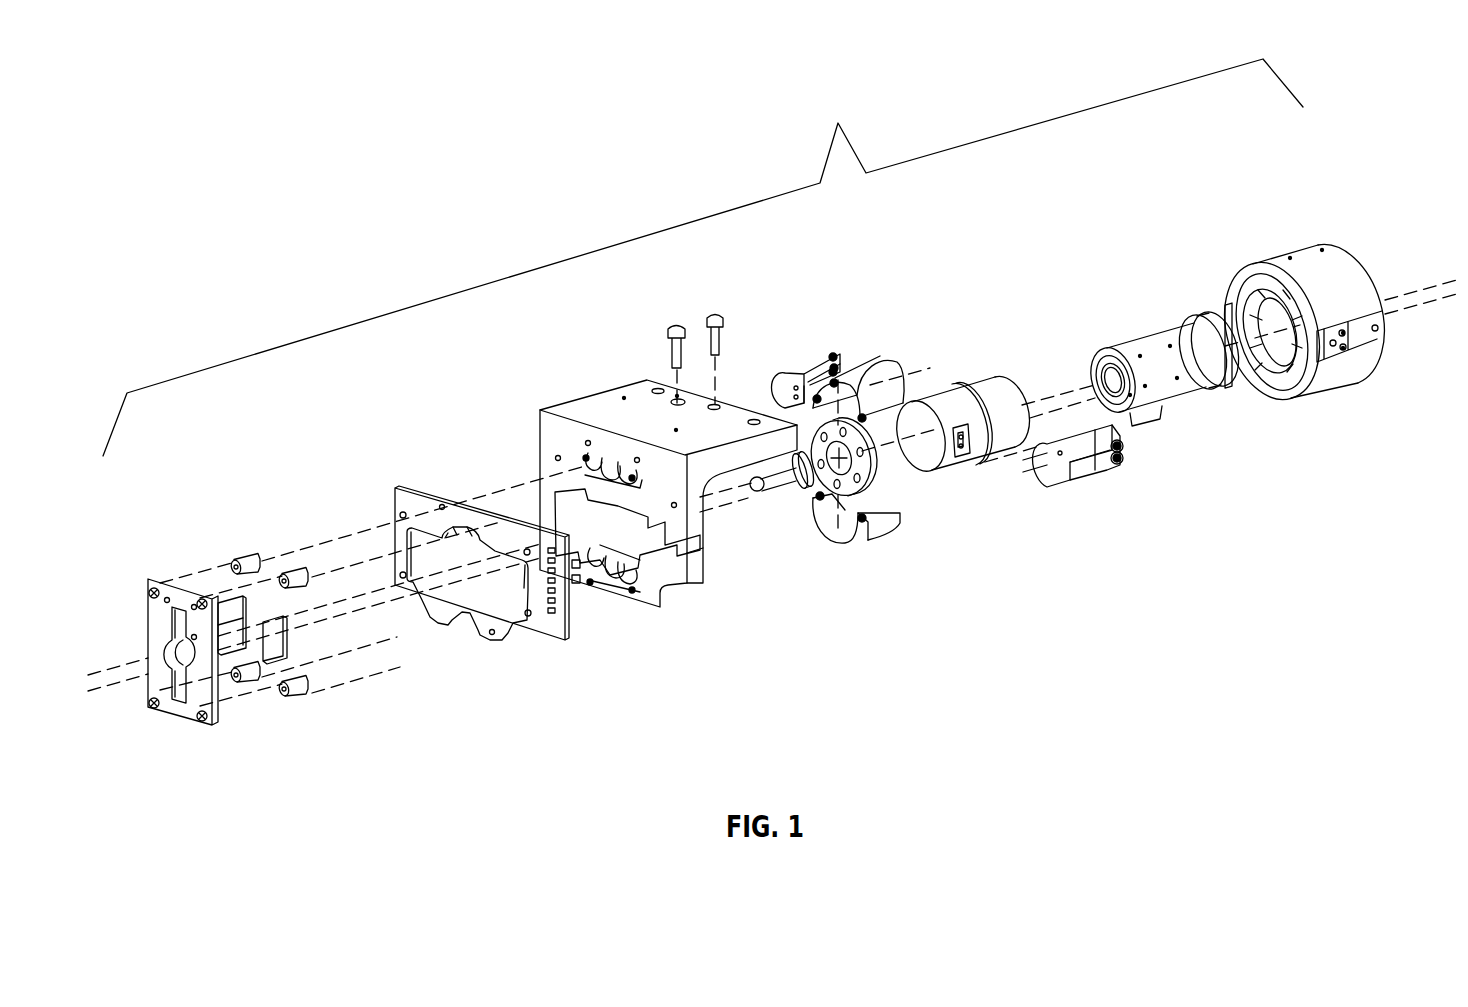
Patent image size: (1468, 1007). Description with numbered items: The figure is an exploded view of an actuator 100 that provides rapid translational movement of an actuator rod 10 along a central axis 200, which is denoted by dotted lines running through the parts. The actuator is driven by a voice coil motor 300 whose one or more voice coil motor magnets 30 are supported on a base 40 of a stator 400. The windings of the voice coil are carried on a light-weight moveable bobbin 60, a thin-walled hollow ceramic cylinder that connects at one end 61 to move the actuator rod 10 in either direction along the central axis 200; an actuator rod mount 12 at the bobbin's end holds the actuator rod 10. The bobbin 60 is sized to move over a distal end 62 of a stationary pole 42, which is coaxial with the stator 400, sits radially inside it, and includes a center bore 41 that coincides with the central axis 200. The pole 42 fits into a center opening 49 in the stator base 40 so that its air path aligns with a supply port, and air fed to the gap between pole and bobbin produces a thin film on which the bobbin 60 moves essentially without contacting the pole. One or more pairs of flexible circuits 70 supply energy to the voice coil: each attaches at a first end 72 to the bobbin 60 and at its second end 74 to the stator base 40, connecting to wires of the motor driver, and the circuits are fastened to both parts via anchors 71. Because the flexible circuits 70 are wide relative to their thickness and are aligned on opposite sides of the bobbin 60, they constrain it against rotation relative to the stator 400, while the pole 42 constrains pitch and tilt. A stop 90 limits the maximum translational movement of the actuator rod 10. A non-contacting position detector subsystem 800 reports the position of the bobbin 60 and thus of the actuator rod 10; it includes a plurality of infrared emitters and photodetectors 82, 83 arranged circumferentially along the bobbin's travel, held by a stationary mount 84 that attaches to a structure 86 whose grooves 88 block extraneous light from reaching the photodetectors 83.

The actuator 100 is at (837, 135).
The central axis 200 is at (1424, 276).
The voice coil motor 300 is at (1143, 372).
The stator 400 is at (1294, 335).
The position detector subsystem 800 is at (689, 486).
The actuator rod 10 is at (790, 493).
The actuator rod mount 12 is at (875, 368).
The voice coil motor magnets 30 is at (1292, 300).
The base 40 is at (1352, 270).
The center bore 41 is at (1100, 372).
The stationary pole 42 is at (1170, 332).
The center opening 49 is at (1270, 331).
The bobbin 60 is at (1153, 436).
The end of bobbin 61 is at (920, 475).
The distal end 62 is at (1132, 432).
The flexible circuits 70 is at (780, 357).
The anchors 71 is at (958, 462).
The first end 72 is at (1034, 490).
The second ends 74 is at (1128, 462).
The infrared emitters 82 is at (458, 526).
The photodetectors 83 is at (486, 538).
The stationary mount 84 is at (691, 560).
The structure 86 is at (585, 444).
The grooves 88 is at (612, 596).
The stop 90 is at (160, 585).